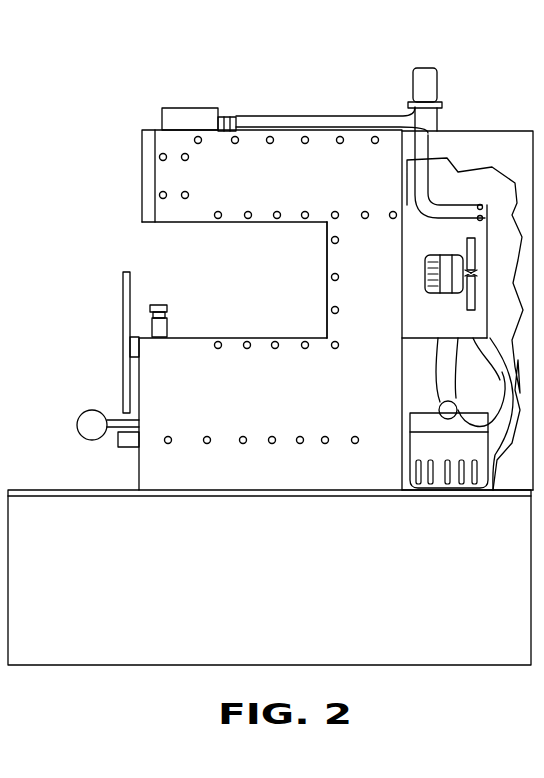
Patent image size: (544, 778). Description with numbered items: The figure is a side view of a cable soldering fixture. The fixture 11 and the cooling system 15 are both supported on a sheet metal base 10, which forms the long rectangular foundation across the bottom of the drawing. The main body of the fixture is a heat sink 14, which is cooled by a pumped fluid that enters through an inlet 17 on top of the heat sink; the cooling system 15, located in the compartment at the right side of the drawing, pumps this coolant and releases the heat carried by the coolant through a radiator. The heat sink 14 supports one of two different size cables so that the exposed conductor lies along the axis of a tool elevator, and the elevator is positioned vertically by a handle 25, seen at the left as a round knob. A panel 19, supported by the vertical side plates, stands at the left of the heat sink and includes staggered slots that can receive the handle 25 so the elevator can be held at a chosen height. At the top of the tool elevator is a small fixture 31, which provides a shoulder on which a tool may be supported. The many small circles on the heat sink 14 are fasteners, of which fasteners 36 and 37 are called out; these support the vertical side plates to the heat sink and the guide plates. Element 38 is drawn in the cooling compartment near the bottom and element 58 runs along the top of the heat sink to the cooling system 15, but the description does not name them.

The sheet metal base 10 is at (160, 612).
The fixture 11 is at (286, 302).
The heat sink 14 is at (141, 190).
The cooling system 15 is at (507, 131).
The inlet 17 is at (188, 110).
The panel 19 is at (123, 318).
The handle 25 is at (85, 437).
The fixture 31 is at (167, 306).
The fastener 36 is at (356, 444).
The fastener 37 is at (337, 349).
The pump 38 is at (418, 446).
The hose 58 is at (318, 114).